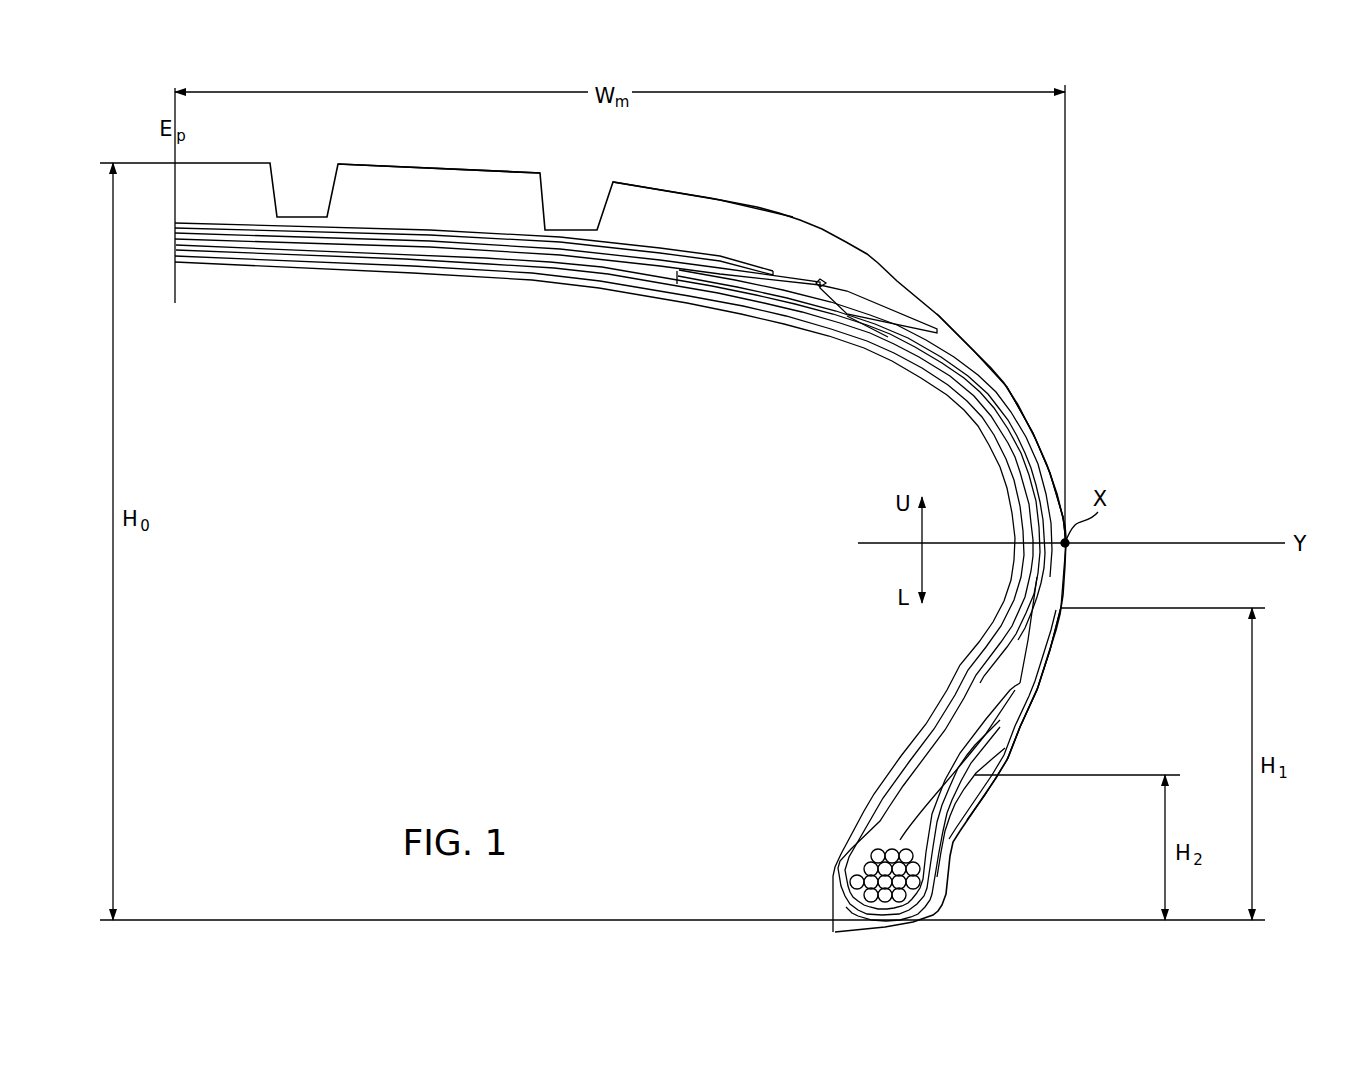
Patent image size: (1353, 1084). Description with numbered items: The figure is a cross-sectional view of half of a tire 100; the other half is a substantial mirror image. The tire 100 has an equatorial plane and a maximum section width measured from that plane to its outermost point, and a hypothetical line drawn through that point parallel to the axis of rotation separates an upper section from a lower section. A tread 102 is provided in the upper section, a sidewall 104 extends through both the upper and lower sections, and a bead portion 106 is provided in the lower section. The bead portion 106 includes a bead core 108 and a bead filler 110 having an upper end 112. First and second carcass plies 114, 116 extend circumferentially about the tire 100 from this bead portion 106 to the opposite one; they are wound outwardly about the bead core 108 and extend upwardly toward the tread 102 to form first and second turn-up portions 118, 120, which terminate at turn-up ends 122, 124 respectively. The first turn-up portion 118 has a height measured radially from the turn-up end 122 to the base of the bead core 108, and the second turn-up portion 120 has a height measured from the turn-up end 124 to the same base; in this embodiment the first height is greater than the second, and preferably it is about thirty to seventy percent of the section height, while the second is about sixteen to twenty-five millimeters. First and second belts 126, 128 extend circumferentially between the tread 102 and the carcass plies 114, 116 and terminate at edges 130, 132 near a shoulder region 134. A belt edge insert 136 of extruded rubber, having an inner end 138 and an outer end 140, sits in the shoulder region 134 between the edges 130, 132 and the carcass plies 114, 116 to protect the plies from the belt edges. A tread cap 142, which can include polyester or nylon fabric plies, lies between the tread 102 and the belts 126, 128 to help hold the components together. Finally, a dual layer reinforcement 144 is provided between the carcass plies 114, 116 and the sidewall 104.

The tire 100 is at (1115, 265).
The tread 102 is at (470, 167).
The sidewall 104 is at (1085, 413).
The bead portion 106 is at (604, 582).
The bead core 108 is at (858, 865).
The bead filler 110 is at (900, 808).
The upper end 112 is at (1020, 690).
The first carcass ply 114 is at (310, 265).
The second carcass ply 116 is at (490, 265).
The first turn-up portion 118 is at (997, 745).
The second turn-up portion 120 is at (958, 793).
The turn-up end 122 is at (1060, 608).
The turn-up end 124 is at (975, 764).
The first belt 126 is at (267, 240).
The second belt 128 is at (435, 240).
The edge 130 is at (826, 282).
The edge 132 is at (793, 275).
The shoulder region 134 is at (867, 185).
The belt edge insert 136 is at (810, 297).
The inner end 138 is at (677, 273).
The outer end 140 is at (938, 318).
The tread cap 142 is at (685, 252).
The dual layer reinforcement 144 is at (1047, 490).